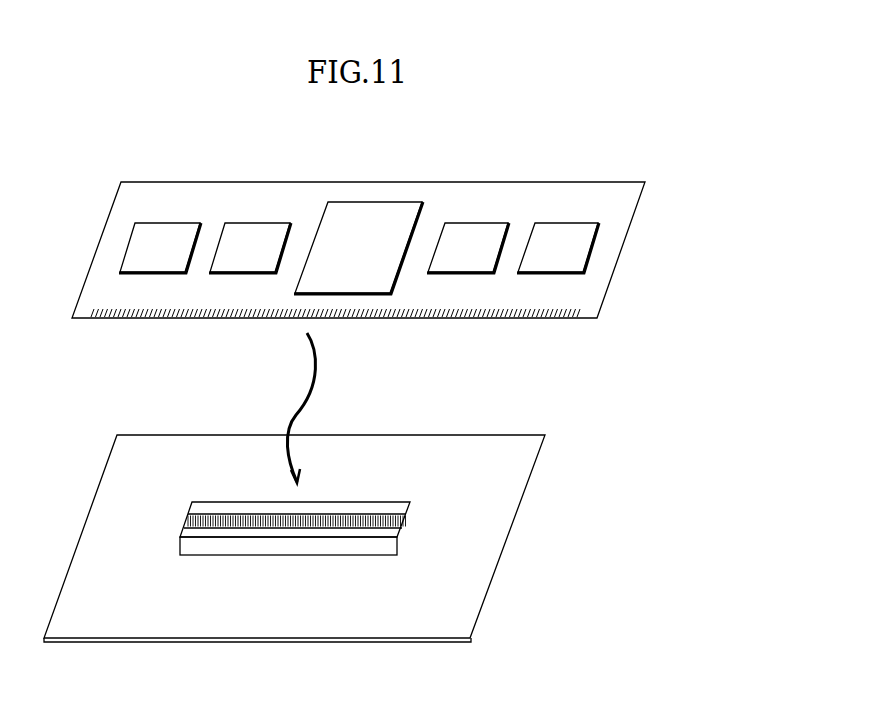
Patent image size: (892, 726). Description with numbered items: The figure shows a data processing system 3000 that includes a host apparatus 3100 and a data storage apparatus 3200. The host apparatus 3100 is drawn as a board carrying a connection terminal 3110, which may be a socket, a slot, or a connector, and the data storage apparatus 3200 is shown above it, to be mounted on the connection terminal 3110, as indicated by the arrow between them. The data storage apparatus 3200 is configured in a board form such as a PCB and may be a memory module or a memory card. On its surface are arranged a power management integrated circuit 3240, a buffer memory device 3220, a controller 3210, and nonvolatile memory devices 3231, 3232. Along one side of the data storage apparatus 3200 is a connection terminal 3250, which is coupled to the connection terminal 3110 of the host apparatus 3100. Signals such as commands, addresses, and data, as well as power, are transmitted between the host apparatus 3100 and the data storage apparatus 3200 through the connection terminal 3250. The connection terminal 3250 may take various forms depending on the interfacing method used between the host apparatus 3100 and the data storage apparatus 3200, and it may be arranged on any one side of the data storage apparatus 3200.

The data processing system 3000 is at (217, 148).
The data storage apparatus 3200 is at (177, 211).
The power management integrated circuit (PMIC) 3240 is at (179, 260).
The buffer memory device 3220 is at (269, 260).
The controller 3210 is at (379, 260).
The nonvolatile memory device 3231 is at (489, 260).
The nonvolatile memory device 3232 is at (579, 260).
The connection terminal 3250 is at (108, 318).
The host apparatus 3100 is at (110, 636).
The connection terminal 3110 is at (428, 499).